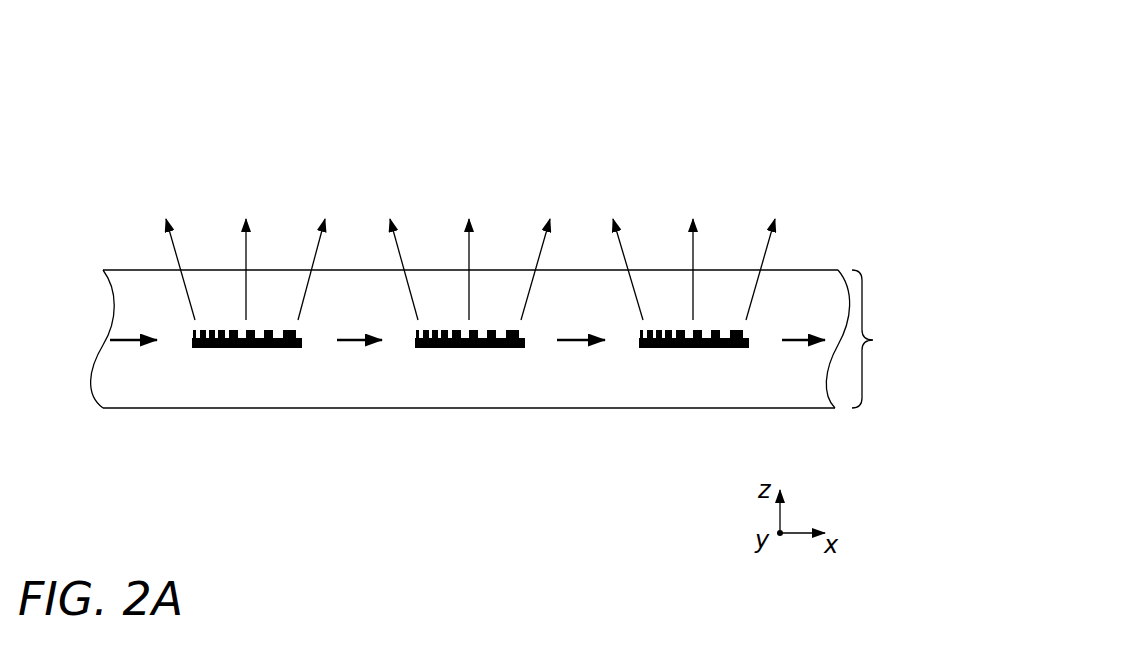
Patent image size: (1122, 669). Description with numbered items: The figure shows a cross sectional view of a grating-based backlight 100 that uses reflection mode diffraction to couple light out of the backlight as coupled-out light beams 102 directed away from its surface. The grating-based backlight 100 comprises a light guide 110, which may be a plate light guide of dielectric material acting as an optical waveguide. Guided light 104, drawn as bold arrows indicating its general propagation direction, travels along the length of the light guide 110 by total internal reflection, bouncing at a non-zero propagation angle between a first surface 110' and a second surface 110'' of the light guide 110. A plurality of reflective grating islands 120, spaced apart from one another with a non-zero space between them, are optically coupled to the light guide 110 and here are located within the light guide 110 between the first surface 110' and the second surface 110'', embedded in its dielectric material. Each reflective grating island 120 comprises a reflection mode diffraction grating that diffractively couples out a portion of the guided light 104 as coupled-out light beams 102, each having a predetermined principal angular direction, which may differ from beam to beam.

The grating-based backlight 100 is at (813, 63).
The coupled-out light beam 102 is at (794, 223).
The guided light 104 is at (353, 343).
The light guide 110 is at (892, 339).
The first surface 110' is at (511, 245).
The second surface 110'' is at (515, 432).
The reflective grating island 120 is at (239, 362).